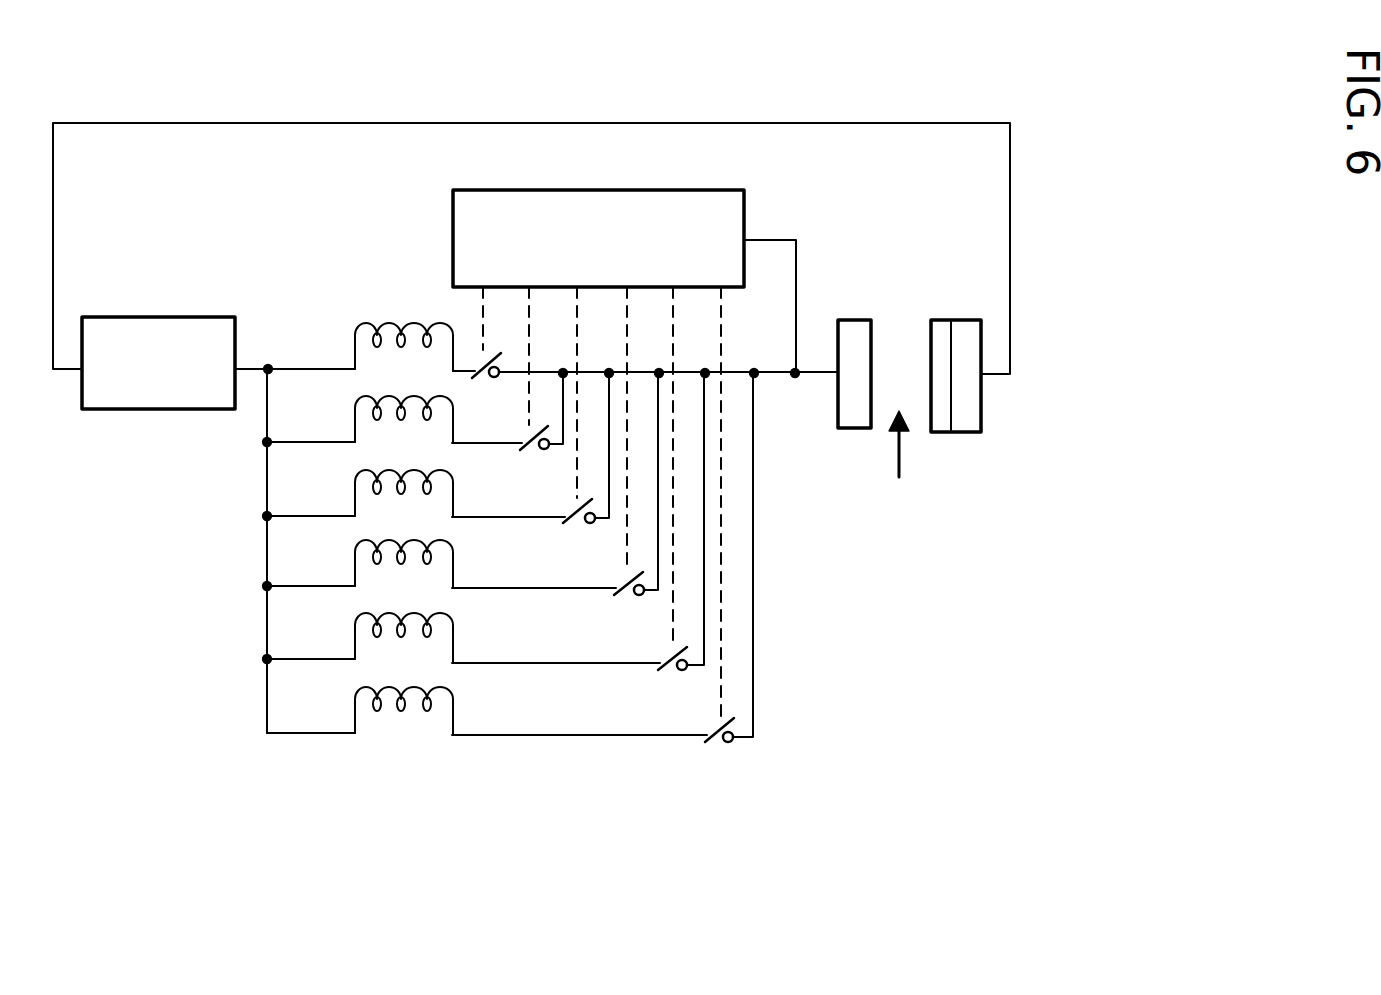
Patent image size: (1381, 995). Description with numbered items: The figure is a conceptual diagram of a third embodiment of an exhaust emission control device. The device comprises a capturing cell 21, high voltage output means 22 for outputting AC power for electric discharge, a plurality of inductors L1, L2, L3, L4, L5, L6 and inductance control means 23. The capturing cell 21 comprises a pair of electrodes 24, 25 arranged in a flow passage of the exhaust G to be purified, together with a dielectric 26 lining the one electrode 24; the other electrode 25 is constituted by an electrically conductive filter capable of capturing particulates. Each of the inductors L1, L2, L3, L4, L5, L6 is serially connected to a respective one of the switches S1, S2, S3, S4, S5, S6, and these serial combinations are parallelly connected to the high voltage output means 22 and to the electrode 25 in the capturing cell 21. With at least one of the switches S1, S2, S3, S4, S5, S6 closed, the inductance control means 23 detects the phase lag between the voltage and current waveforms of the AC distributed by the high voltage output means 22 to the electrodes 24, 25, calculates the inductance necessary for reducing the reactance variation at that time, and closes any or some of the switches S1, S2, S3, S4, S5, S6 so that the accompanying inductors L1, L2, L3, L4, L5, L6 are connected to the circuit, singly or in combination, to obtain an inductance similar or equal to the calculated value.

The capturing cell 21 is at (993, 435).
The high voltage output means 22 is at (100, 400).
The inductance control means 23 is at (453, 199).
The electrode 24 is at (967, 325).
The electrode 25 is at (853, 325).
The dielectric 26 is at (937, 323).
The inductor L1 is at (355, 333).
The inductor L2 is at (355, 406).
The inductor L3 is at (355, 480).
The inductor L4 is at (355, 556).
The inductor L5 is at (355, 629).
The inductor L6 is at (355, 702).
The switch S1 is at (476, 383).
The switch S2 is at (523, 453).
The switch S3 is at (566, 527).
The switch S4 is at (617, 599).
The switch S5 is at (661, 674).
The switch S6 is at (708, 746).
The exhaust G is at (897, 477).